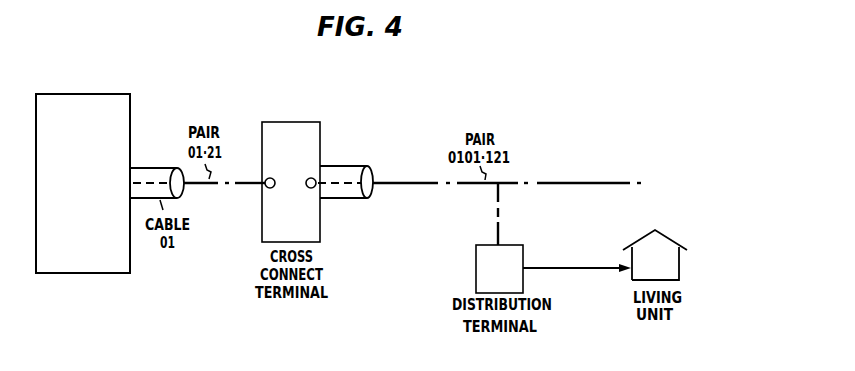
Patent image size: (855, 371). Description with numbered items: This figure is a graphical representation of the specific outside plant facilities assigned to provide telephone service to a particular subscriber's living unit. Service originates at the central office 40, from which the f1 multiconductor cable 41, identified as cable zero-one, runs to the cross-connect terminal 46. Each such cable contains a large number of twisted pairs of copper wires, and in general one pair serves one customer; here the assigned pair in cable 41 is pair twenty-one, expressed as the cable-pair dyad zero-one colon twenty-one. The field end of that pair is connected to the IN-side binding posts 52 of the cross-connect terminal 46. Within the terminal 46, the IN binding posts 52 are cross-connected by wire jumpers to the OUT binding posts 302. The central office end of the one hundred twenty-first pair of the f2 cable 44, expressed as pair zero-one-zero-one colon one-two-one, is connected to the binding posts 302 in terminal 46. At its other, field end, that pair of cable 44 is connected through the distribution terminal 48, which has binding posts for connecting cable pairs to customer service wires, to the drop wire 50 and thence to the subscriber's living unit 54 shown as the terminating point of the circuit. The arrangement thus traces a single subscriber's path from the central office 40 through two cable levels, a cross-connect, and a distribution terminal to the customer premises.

The central office 40 is at (78, 273).
The cable 41 is at (155, 167).
The binding posts 52 is at (268, 177).
The OUT binding posts 302 is at (312, 177).
The cable 44 is at (352, 200).
The cross-connect terminal 46 is at (312, 222).
The distribution terminal 48 is at (476, 270).
The drop wire 50 is at (581, 266).
The living unit 54 is at (681, 271).